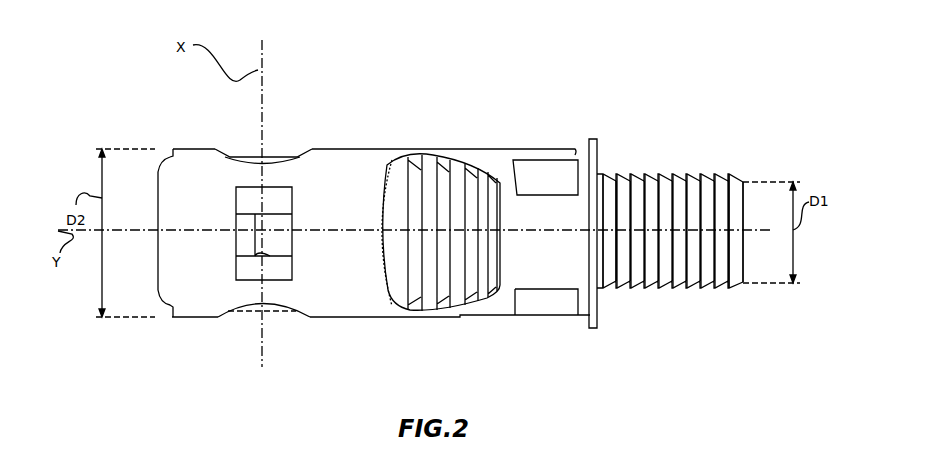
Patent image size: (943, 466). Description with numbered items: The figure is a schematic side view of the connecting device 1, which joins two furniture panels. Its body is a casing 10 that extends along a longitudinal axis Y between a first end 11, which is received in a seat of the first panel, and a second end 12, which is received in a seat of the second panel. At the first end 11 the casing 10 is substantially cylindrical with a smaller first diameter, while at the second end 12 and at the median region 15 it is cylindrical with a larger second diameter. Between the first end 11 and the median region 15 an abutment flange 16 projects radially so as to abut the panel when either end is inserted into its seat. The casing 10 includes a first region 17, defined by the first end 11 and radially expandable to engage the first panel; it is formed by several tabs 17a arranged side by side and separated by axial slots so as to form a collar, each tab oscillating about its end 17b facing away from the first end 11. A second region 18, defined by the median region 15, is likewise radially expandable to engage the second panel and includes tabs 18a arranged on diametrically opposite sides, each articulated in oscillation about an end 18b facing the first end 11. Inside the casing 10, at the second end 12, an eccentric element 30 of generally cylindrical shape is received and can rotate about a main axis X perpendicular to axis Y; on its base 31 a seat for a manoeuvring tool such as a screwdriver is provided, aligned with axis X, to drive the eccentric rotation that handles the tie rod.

The connecting device 1 is at (383, 111).
The casing 10 is at (364, 320).
The first end 11 is at (715, 290).
The second end 12 is at (184, 321).
The median region 15 is at (450, 322).
The abutment flange 16 is at (598, 172).
The first region 17 is at (651, 176).
The tabs 17a is at (730, 175).
The end of tabs 17b is at (606, 170).
The second region 18 is at (430, 186).
The tabs 18a is at (457, 175).
The end of tabs 18b is at (497, 193).
The eccentric element 30 is at (276, 150).
The base 31 is at (247, 316).